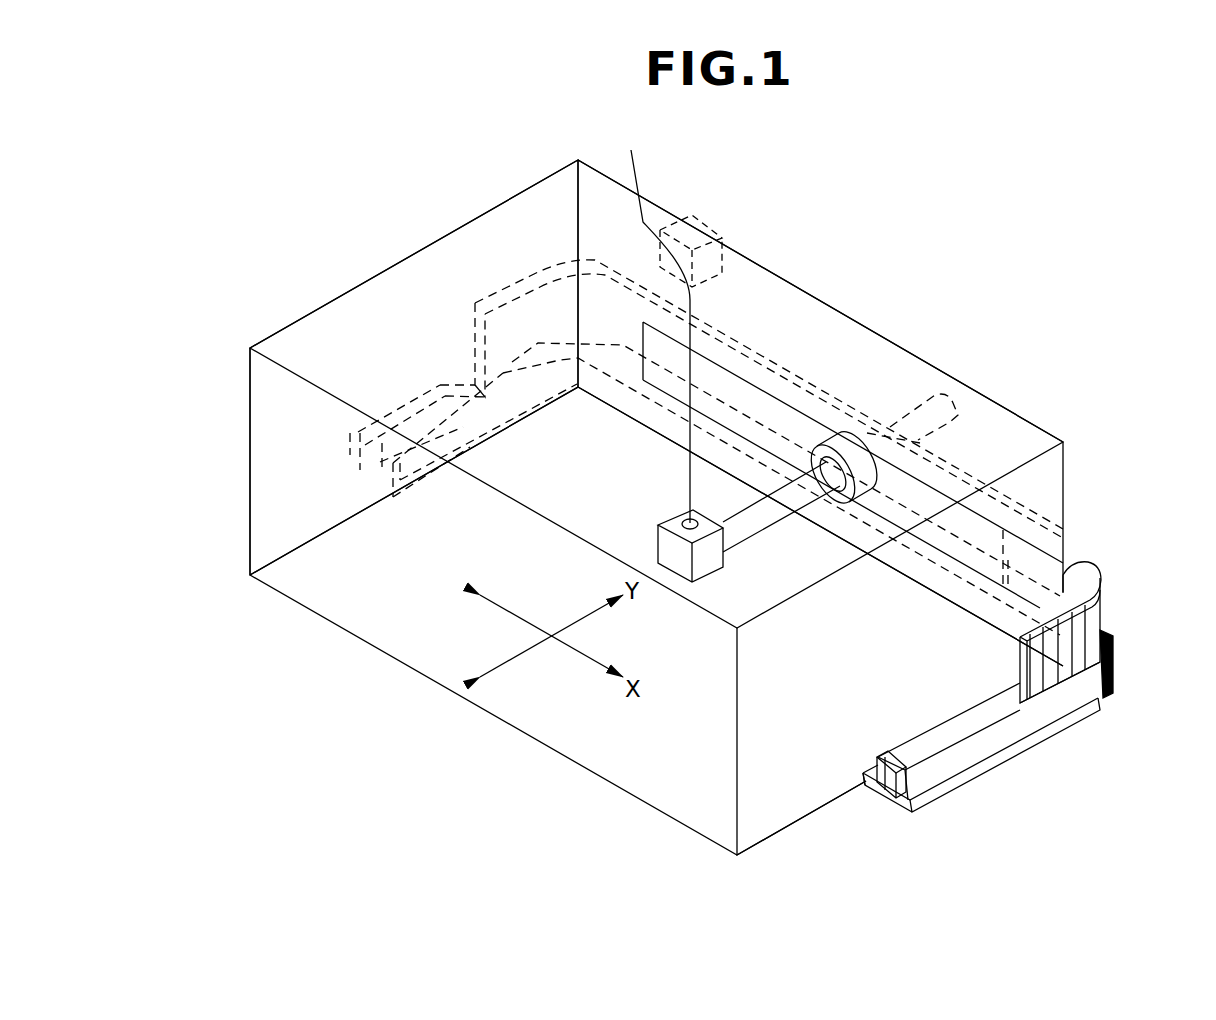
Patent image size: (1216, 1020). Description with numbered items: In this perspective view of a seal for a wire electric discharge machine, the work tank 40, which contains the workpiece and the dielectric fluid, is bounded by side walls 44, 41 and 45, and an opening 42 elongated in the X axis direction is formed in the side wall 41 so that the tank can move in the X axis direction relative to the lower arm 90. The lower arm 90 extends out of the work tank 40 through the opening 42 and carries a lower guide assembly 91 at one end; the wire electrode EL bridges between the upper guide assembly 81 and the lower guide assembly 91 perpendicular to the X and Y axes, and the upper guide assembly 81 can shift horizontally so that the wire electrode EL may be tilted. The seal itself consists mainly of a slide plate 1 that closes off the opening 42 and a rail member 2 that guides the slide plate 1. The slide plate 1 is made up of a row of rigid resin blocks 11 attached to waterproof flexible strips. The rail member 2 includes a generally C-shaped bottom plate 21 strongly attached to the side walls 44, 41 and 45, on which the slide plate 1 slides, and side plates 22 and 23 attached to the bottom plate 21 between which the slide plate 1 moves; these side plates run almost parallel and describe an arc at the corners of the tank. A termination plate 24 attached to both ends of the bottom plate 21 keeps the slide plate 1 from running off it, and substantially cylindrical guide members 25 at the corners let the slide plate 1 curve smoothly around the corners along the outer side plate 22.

The slide plate 1 is at (1010, 687).
The rail member 2 is at (1122, 662).
The block 11 is at (1083, 660).
The bottom plate 21 is at (972, 775).
The side plate 22 is at (905, 810).
The side plate 23 is at (878, 783).
The termination plate 24 is at (897, 787).
The guide member 25 is at (1070, 577).
The work tank 40 is at (432, 228).
The side wall 41 is at (785, 290).
The opening 42 is at (785, 413).
The side wall 44 is at (770, 823).
The side wall 45 is at (523, 208).
The upper guide assembly 81 is at (698, 222).
The lower arm 90 is at (742, 545).
The lower guide assembly 91 is at (658, 543).
The wire electrode EL is at (655, 322).